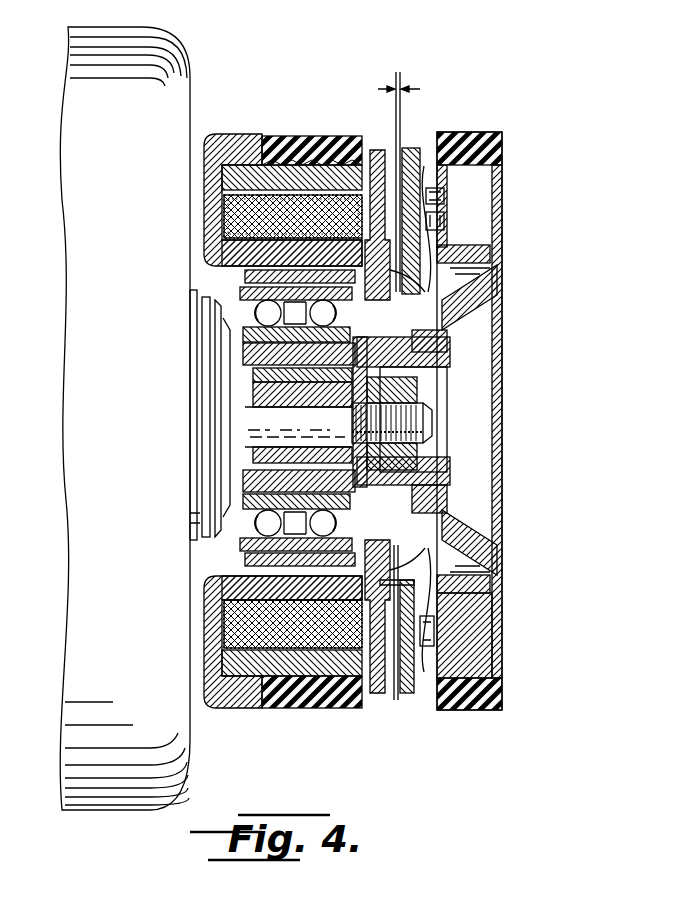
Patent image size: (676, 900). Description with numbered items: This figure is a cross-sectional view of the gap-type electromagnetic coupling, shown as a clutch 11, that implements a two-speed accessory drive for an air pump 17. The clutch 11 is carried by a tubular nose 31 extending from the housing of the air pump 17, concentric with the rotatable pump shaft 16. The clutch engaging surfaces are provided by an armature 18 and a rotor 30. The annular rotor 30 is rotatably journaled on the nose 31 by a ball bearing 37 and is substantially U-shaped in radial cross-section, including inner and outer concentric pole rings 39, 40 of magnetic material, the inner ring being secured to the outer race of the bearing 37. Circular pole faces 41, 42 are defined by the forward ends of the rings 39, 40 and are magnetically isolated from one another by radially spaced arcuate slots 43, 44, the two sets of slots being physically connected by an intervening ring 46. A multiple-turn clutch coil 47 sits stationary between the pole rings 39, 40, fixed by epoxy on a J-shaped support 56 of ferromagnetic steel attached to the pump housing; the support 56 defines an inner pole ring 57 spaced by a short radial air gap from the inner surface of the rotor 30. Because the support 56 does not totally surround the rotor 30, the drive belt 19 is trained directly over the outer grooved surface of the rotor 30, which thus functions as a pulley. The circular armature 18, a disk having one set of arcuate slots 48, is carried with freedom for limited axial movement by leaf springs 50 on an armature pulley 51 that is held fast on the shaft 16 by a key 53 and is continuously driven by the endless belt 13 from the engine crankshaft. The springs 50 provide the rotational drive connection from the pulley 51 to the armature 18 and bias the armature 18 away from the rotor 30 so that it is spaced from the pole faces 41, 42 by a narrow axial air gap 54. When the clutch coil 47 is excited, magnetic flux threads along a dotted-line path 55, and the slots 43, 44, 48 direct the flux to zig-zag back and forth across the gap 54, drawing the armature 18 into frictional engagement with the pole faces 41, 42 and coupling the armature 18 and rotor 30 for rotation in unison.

The electromagnetic clutch 11 is at (500, 86).
The endless belt 13 is at (485, 133).
The shaft 16 is at (423, 413).
The air pump 17 is at (185, 55).
The circular armature 18 is at (455, 710).
The drive belt 19 is at (286, 134).
The rotor 30 is at (390, 700).
The tubular nose 31 is at (248, 355).
The ball bearing 37 is at (240, 322).
The inner pole ring 39 is at (260, 270).
The outer pole ring 40 is at (237, 180).
The pole face 41 is at (432, 276).
The pole face 42 is at (413, 148).
The arcuate slots 43 is at (293, 216).
The arcuate slots 44 is at (372, 150).
The intervening ring 46 is at (432, 193).
The clutch coil 47 is at (235, 234).
The arcuate slots 48 is at (434, 218).
The leaf springs 50 is at (462, 258).
The armature pulley 51 is at (497, 637).
The key 53 is at (268, 392).
The axial air gap 54 is at (403, 82).
The flux path 55 is at (238, 228).
The J-shaped support 56 is at (238, 625).
The inner pole ring 57 is at (245, 585).